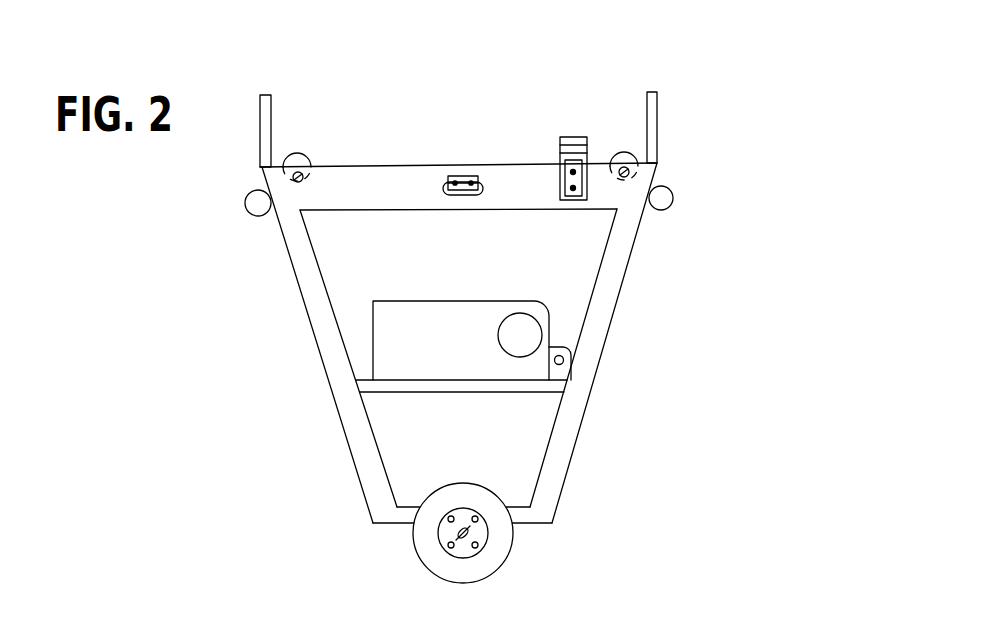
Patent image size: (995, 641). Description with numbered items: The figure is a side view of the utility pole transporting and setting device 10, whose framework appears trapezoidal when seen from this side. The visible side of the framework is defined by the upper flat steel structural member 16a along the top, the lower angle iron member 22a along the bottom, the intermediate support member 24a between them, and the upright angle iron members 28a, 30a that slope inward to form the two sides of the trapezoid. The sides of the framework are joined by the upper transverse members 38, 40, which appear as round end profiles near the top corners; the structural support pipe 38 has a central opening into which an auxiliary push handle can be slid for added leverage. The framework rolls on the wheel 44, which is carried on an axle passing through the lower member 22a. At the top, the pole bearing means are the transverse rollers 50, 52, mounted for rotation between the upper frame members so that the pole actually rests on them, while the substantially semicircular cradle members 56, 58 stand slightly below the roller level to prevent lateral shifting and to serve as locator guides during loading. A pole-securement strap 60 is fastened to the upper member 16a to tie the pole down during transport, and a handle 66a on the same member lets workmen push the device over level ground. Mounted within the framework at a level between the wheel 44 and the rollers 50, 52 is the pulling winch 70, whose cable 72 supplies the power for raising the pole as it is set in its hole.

The utility pole transporting and setting device 10 is at (236, 325).
The upper flat steel structural member 16a is at (390, 186).
The lower angle iron member 22a is at (390, 522).
The intermediate support member 24a is at (522, 385).
The upright angle iron member 28a is at (605, 302).
The upright angle iron member 30a is at (357, 428).
The upper transverse member 38 is at (670, 188).
The upper transverse member 40 is at (250, 213).
The wheel 44 is at (505, 560).
The transverse roller 50 is at (627, 151).
The transverse roller 52 is at (306, 154).
The semicircular cradle member 56 is at (657, 92).
The semicircular cradle member 58 is at (273, 108).
The pole-securement strap 60 is at (572, 137).
The handle 66a is at (481, 175).
The pulling winch 70 is at (438, 300).
The cable 72 is at (567, 352).